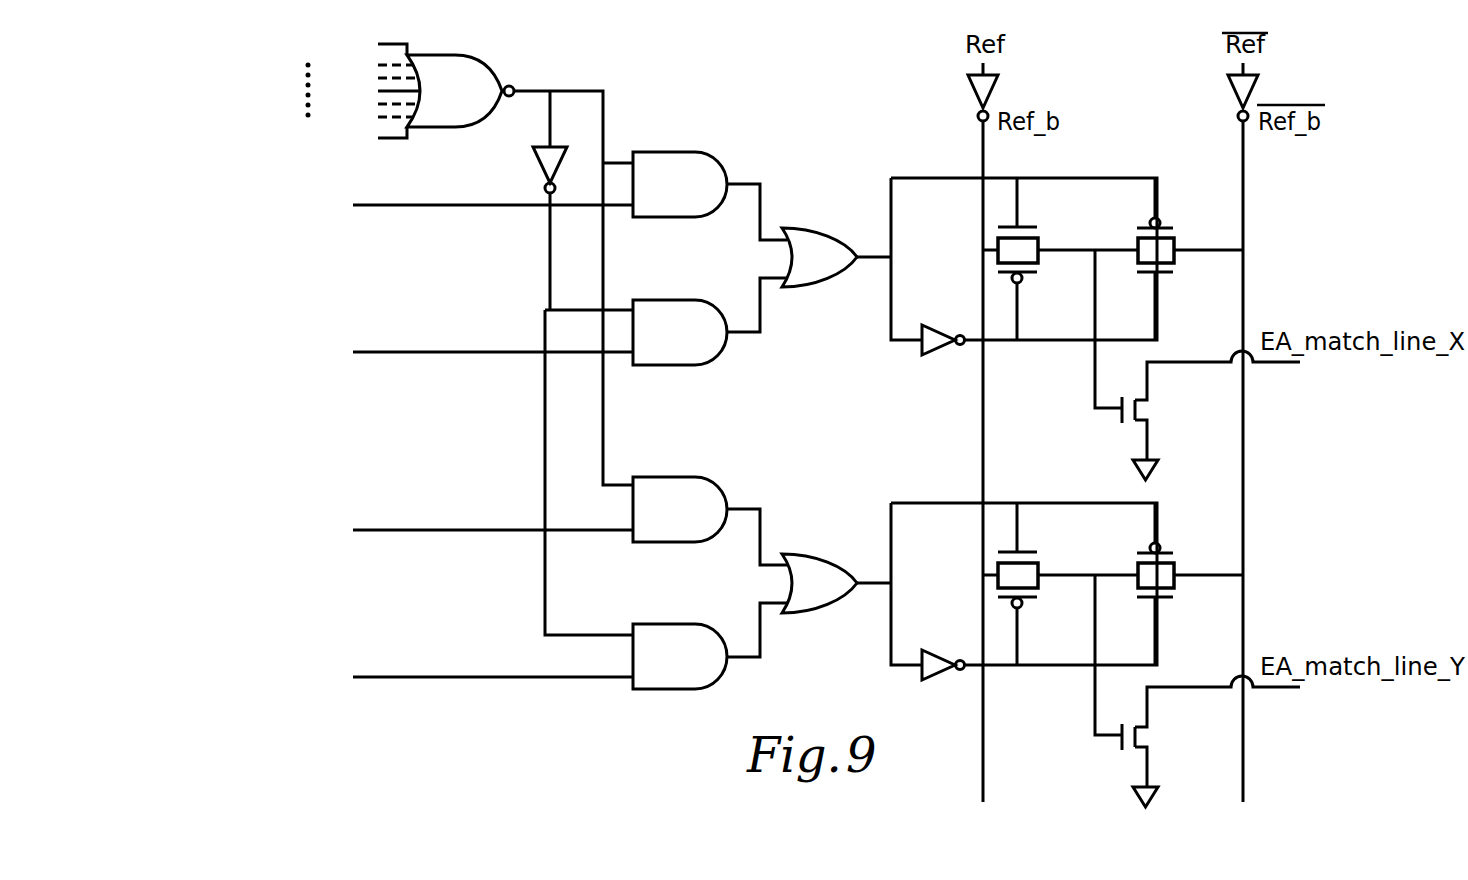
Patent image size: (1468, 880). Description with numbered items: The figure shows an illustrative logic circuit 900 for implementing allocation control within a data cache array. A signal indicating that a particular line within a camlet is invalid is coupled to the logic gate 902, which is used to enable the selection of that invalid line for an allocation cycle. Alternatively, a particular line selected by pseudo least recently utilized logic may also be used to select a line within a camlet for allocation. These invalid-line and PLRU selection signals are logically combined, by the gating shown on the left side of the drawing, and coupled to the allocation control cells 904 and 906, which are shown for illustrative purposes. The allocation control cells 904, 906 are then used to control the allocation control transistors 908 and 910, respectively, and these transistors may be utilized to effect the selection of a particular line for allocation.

The match line logic circuit 900 is at (810, 126).
The logic gate 902 is at (483, 62).
The allocation control cell 904 is at (1073, 178).
The allocation control cell 906 is at (1073, 503).
The allocation control transistor 908 is at (1142, 403).
The allocation control transistor 910 is at (1142, 730).